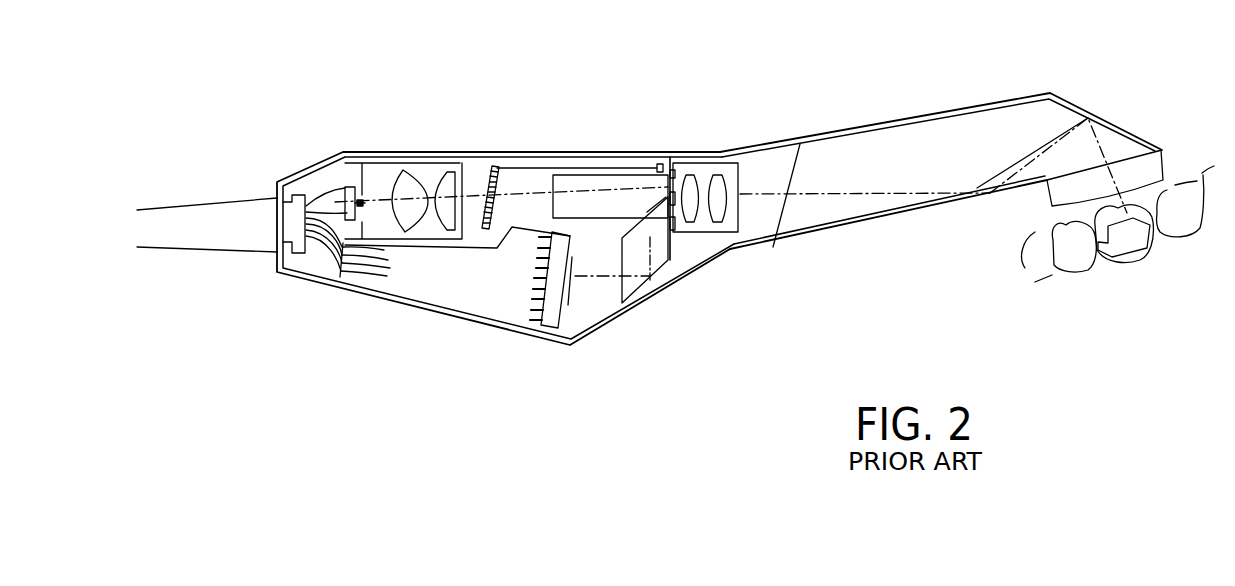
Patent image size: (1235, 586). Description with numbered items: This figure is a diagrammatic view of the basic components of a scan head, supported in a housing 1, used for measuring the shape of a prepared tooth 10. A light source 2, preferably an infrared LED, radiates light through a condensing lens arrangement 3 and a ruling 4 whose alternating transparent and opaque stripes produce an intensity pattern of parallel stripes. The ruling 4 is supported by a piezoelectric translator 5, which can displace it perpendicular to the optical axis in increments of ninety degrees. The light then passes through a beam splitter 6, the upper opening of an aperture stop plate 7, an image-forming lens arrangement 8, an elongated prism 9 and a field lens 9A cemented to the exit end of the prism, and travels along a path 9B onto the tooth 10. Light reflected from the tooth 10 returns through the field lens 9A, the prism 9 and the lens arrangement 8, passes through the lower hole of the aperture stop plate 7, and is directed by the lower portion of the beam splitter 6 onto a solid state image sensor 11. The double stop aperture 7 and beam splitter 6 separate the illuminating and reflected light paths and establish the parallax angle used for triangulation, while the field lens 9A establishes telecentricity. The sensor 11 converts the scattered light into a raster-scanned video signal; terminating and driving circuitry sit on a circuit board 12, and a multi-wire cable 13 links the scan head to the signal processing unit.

The housing 1 is at (405, 300).
The light source 2 is at (348, 195).
The condensing lens arrangement 3 is at (412, 168).
The ruling 4 is at (480, 168).
The piezoelectric translator 5 is at (540, 170).
The beam splitter 6 is at (620, 170).
The aperture stop plate 7 is at (678, 228).
The image-forming lens arrangement 8 is at (707, 178).
The prism 9 is at (942, 142).
The field lens 9A is at (1146, 168).
The path 9B is at (1112, 162).
The tooth 10 is at (1132, 245).
The sensor 11 is at (567, 313).
The circuit board 12 is at (497, 298).
The multi-wire cable 13 is at (220, 240).